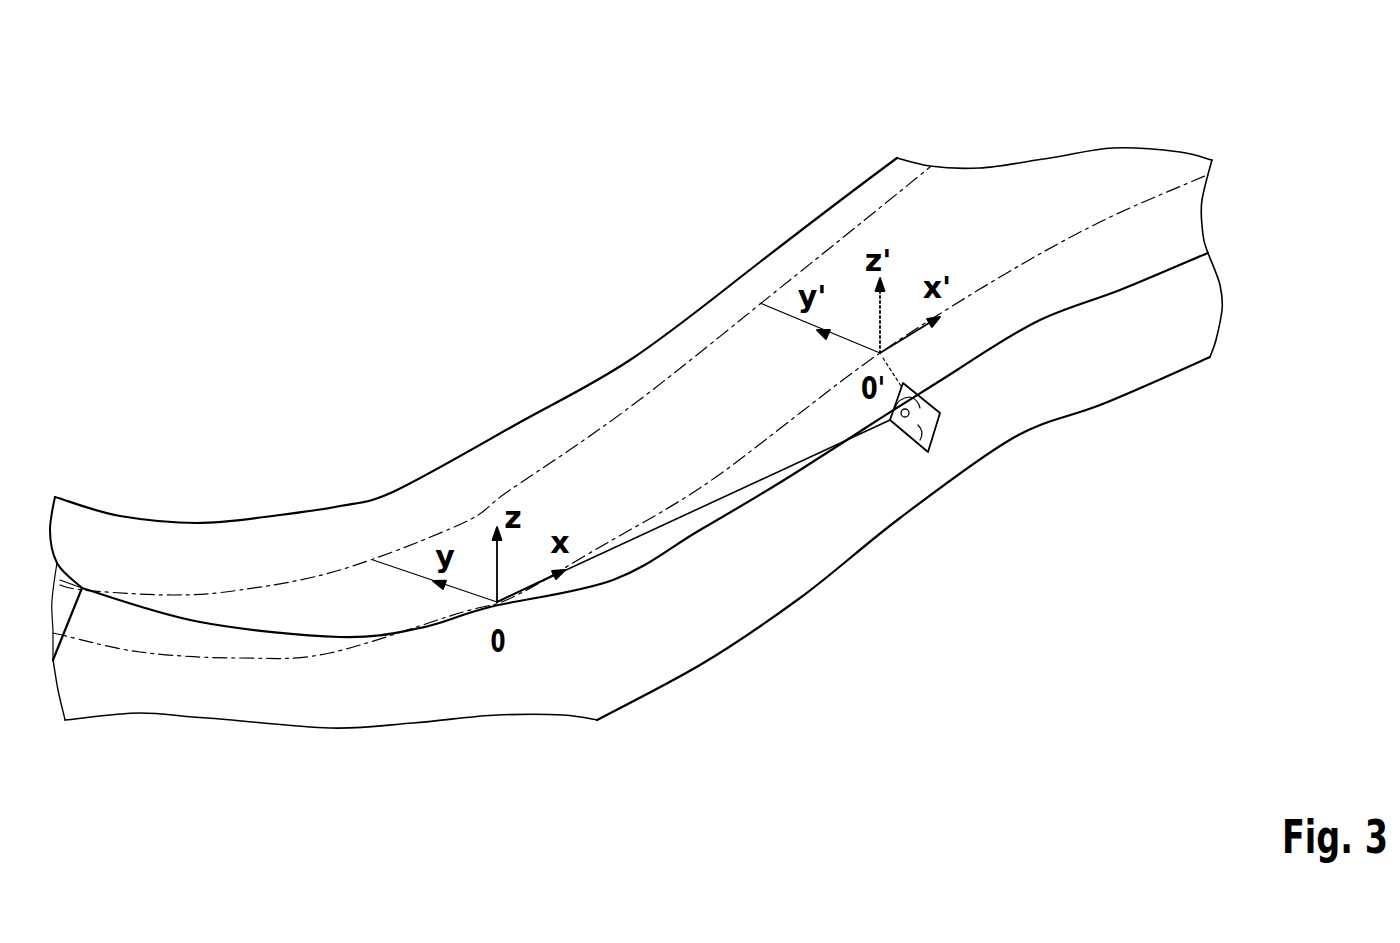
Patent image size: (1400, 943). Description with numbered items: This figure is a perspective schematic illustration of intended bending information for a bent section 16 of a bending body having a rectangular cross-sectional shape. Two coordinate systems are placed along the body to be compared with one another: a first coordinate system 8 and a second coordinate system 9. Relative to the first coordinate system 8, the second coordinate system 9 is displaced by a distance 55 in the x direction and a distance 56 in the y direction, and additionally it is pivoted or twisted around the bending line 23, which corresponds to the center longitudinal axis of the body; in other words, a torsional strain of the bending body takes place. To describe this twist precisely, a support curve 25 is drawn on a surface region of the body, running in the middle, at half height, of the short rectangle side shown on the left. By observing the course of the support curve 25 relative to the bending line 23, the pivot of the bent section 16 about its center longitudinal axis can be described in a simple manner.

The bent section 16 is at (495, 383).
The first coordinate system 8 is at (457, 523).
The second coordinate system 9 is at (838, 275).
The support curve 25 is at (623, 362).
The bending line 23 is at (1133, 205).
The distance in the x direction 55 is at (508, 610).
The distance in the y direction 56 is at (888, 356).